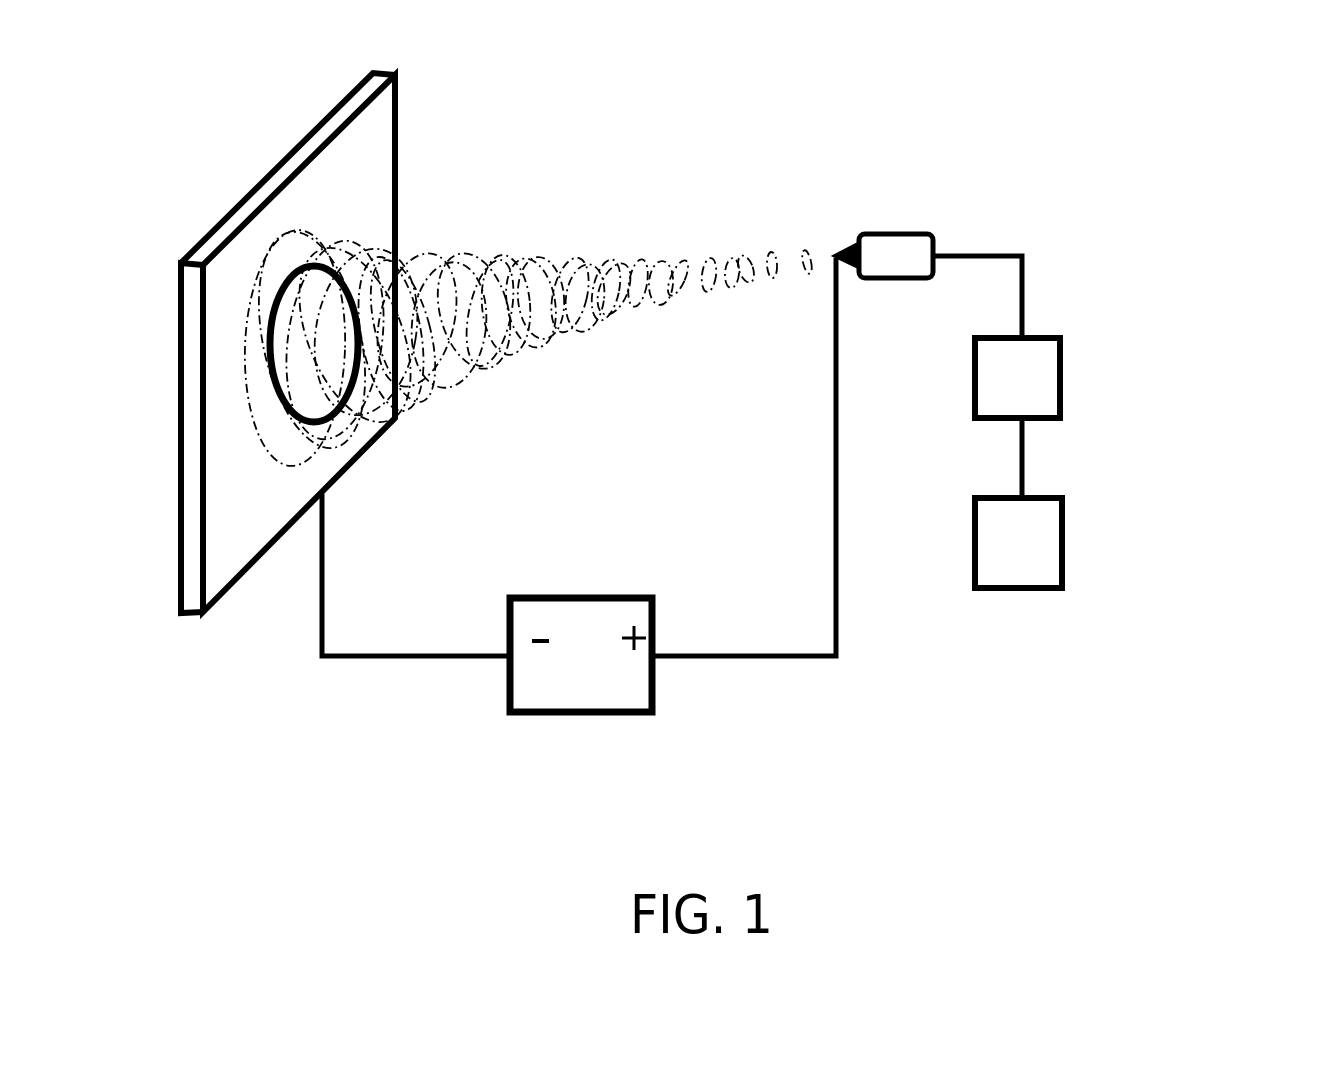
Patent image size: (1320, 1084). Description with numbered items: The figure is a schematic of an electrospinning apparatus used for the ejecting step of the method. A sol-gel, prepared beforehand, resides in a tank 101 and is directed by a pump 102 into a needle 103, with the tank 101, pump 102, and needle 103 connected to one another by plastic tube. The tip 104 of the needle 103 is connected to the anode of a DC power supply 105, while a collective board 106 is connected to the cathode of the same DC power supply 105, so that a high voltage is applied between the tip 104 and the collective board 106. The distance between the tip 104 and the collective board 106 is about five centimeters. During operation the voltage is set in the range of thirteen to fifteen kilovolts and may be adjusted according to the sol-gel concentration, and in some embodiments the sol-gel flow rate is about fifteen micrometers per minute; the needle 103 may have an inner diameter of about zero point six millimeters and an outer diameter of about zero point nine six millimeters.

The tank 101 is at (1062, 544).
The pump 102 is at (1060, 378).
The needle 103 is at (893, 233).
The tip 104 is at (835, 251).
The DC power supply 105 is at (581, 714).
The collective board 106 is at (273, 172).